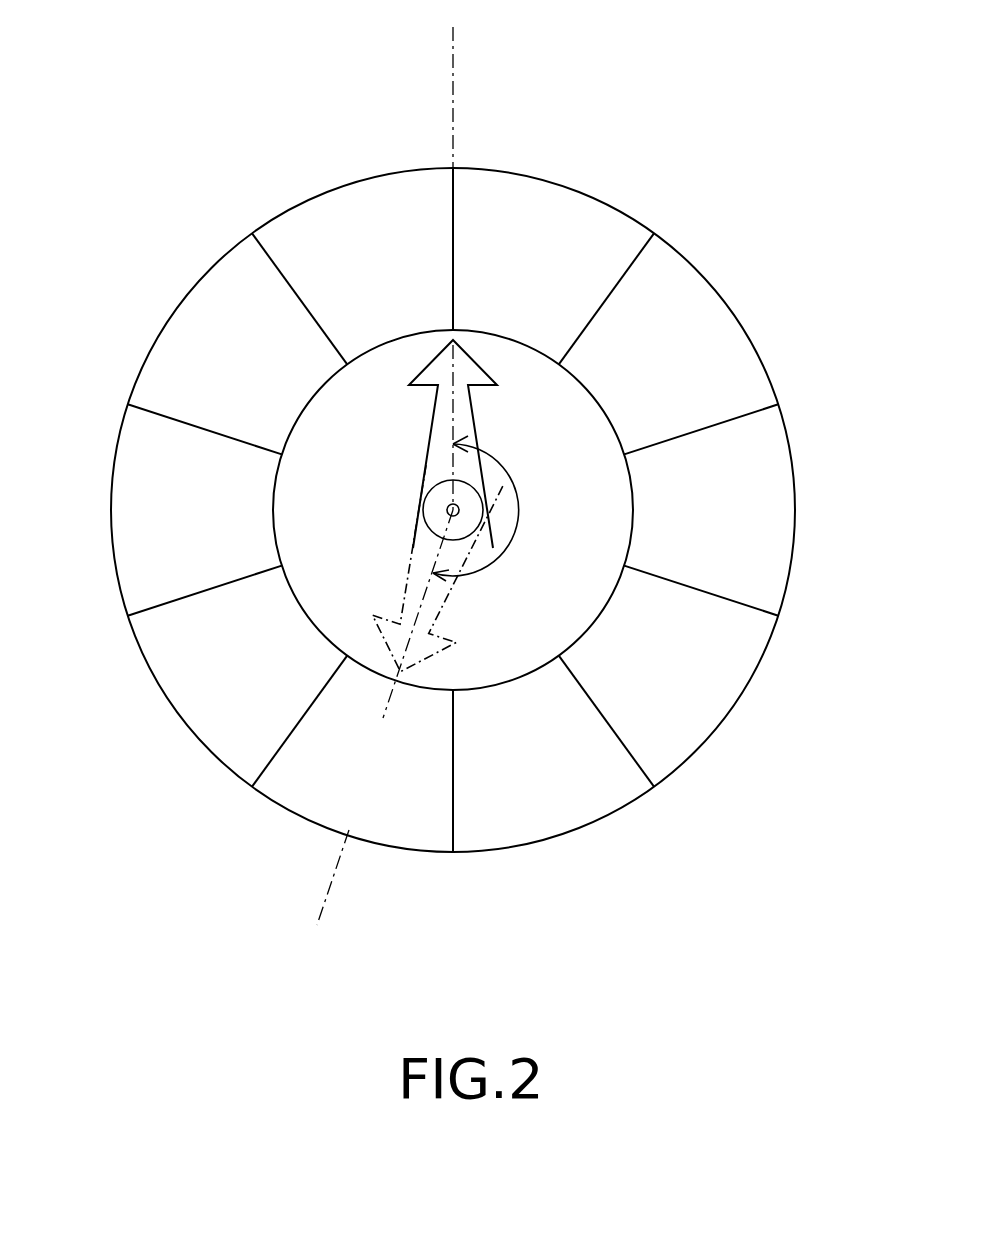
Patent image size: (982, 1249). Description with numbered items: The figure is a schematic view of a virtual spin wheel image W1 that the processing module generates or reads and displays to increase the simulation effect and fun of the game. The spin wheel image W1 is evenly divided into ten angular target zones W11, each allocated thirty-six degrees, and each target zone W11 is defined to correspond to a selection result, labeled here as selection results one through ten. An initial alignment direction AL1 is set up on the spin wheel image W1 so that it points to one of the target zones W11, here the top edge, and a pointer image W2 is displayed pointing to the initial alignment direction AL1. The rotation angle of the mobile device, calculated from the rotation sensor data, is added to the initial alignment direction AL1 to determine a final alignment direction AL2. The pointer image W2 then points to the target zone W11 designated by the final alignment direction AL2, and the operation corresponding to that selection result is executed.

The spin wheel image W1 is at (762, 198).
The target zones W11 is at (604, 212).
The pointer image W2 is at (438, 458).
The initial alignment direction AL1 is at (477, 256).
The final alignment direction AL2 is at (370, 735).